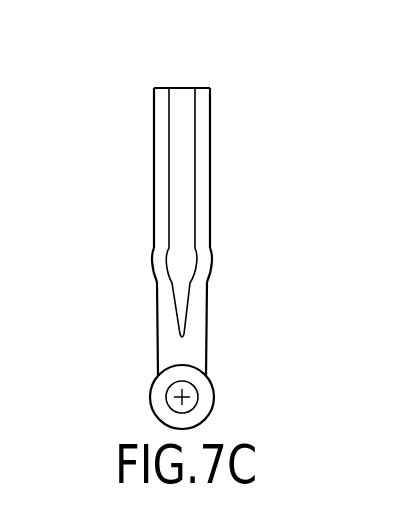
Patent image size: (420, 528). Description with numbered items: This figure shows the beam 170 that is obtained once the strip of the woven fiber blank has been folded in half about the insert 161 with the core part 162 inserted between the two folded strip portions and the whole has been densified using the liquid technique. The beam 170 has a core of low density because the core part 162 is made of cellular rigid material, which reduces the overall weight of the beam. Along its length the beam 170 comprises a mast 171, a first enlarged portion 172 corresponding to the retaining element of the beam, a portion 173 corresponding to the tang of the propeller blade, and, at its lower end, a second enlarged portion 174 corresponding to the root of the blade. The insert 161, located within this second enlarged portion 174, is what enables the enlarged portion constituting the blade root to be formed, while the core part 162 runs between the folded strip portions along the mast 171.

The beam 170 is at (233, 106).
The mast 171 is at (211, 152).
The first enlarged portion 172 is at (212, 256).
The portion corresponding to the tang 173 is at (208, 357).
The second enlarged portion 174 is at (217, 397).
The insert 161 is at (166, 386).
The core part 162 is at (178, 97).